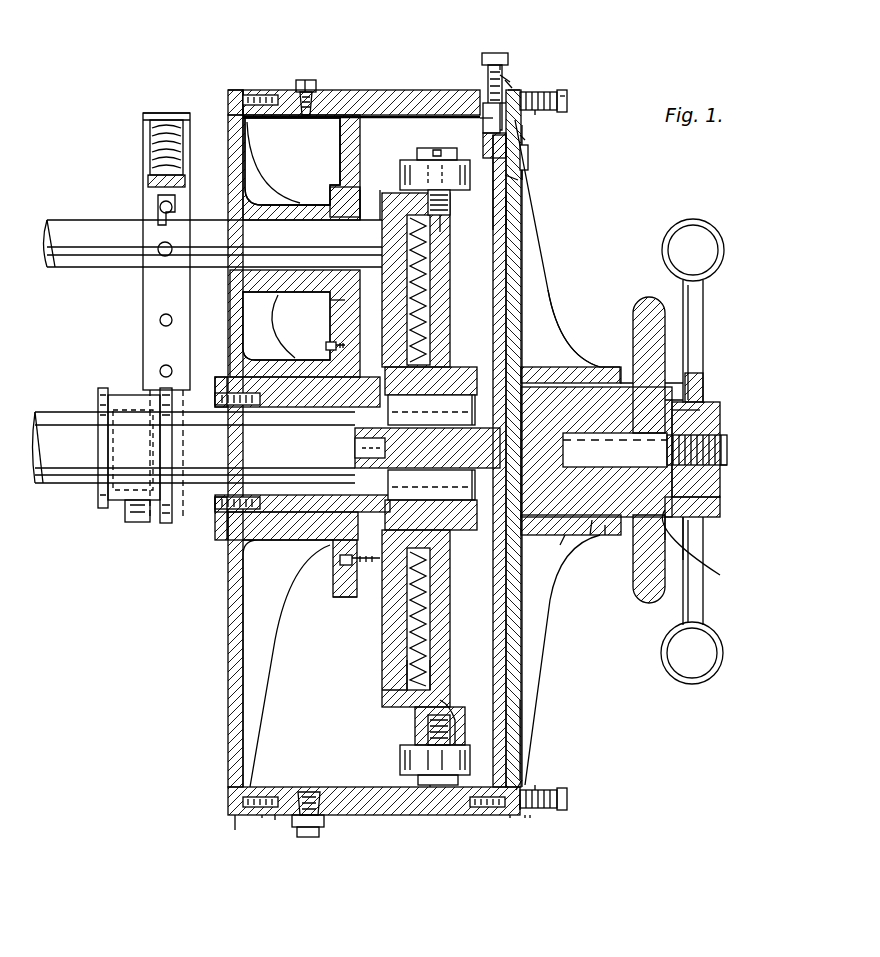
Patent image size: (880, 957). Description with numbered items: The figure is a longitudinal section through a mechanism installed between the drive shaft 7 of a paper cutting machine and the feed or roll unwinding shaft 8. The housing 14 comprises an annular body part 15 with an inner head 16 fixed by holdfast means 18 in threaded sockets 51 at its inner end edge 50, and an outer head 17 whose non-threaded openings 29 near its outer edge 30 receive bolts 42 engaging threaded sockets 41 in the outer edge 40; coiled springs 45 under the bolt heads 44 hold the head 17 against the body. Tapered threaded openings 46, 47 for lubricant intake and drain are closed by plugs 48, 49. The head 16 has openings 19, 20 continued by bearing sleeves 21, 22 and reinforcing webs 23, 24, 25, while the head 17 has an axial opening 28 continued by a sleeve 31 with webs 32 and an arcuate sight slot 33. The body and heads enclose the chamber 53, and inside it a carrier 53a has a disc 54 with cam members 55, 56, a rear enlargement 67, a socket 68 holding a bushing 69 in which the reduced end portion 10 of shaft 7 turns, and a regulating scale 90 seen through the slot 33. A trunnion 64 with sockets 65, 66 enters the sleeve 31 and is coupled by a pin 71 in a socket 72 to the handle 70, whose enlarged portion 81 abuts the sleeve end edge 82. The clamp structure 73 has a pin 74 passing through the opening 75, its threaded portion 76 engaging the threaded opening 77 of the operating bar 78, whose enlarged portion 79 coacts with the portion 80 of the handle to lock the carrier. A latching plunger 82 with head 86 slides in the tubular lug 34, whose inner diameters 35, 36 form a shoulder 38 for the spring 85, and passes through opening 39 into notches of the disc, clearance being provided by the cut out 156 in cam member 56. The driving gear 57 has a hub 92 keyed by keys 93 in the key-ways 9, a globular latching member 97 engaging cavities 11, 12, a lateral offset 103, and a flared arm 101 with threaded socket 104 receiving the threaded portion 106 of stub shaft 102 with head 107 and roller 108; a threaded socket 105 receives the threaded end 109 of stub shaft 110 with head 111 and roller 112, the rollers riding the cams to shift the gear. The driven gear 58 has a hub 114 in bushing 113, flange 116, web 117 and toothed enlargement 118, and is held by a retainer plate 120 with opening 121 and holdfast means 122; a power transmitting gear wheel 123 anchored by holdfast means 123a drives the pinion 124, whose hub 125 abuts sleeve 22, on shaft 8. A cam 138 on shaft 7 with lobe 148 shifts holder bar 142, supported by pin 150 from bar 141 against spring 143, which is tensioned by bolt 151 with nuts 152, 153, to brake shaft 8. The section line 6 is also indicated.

The section line 6 is at (350, 860).
The drive shaft 7 is at (68, 488).
The feed shaft 8 is at (75, 235).
The key-ways 9 is at (520, 435).
The reduced end terminal portion 10 is at (520, 440).
The cavity 11 is at (460, 409).
The cavity 12 is at (460, 484).
The housing 14 is at (326, 84).
The annular body part 15 is at (385, 100).
The inner head 16 is at (220, 694).
The outer head 17 is at (538, 656).
The holdfast means 18 is at (240, 803).
The opening 19 is at (275, 548).
The opening 20 is at (240, 200).
The bearing sleeve 21 is at (290, 352).
The bearing sleeve 22 is at (290, 205).
The reinforcing web 23 is at (270, 195).
The reinforcing web 24 is at (285, 320).
The reinforcing web 25 is at (265, 603).
The axial opening 28 is at (580, 540).
The non-threaded openings 29 is at (522, 818).
The outer edge 30 is at (532, 820).
The sleeve 31 is at (595, 365).
The reinforcing webs 32 is at (545, 250).
The arcuate slot 33 is at (528, 155).
The tubular lug 34 is at (488, 72).
The inner face diameter 35 is at (505, 75).
The inner face diameter 36 is at (515, 95).
The internal shoulder 38 is at (484, 108).
The opening 39 is at (484, 118).
The outer edge 40 is at (505, 818).
The threaded sockets 41 is at (522, 787).
The threaded bolts 42 is at (525, 812).
The bolt heads 44 is at (568, 802).
The coiled springs 45 is at (545, 790).
The threaded opening 46 is at (298, 86).
The threaded opening 47 is at (280, 817).
The threaded plug 48 is at (305, 78).
The threaded plug 49 is at (310, 790).
The inner end edge 50 is at (245, 817).
The threaded sockets 51 is at (266, 818).
The chamber 53 is at (505, 222).
The carrier 53a is at (484, 138).
The circular disc 54 is at (510, 210).
The arcuate cam member 55 is at (525, 170).
The arcuate cam member 56 is at (525, 750).
The driving gear 57 is at (440, 600).
The driven gear 58 is at (385, 632).
The trunnion 64 is at (605, 538).
The socket 65 is at (650, 380).
The socket 66 is at (608, 540).
The circular enlargement 67 is at (485, 400).
The axial socket 68 is at (545, 535).
The bushing 69 is at (560, 345).
The handle 70 is at (650, 297).
The pin 71 is at (700, 378).
The socket 72 is at (720, 415).
The clamp structure 73 is at (705, 310).
The pin 74 is at (616, 450).
The opening 75 is at (685, 488).
The threaded outer portion 76 is at (728, 440).
The threaded opening 77 is at (725, 468).
The operating bar 78 is at (705, 548).
The enlarged portion 79 is at (690, 520).
The enlarged circular portion 80 is at (690, 410).
The enlarged circular portion 81 is at (620, 367).
The latching member 82 is at (722, 572).
The plunger controlling spring 85 is at (510, 85).
The head 86 is at (497, 55).
The regulating scale 90 is at (528, 148).
The hub 92 is at (455, 530).
The keys 93 is at (431, 447).
The globular latching member 97 is at (408, 660).
The flared arm 101 is at (415, 738).
The stub shaft 102 is at (418, 778).
The lateral offset 103 is at (448, 210).
The threaded socket 104 is at (465, 700).
The threaded socket 105 is at (445, 232).
The reduced threaded inner portion 106 is at (428, 728).
The head 107 is at (435, 787).
The roller 108 is at (420, 760).
The reduced threaded end 109 is at (515, 190).
The stub shaft 110 is at (410, 165).
The head 111 is at (420, 150).
The roller 112 is at (419, 176).
The bushing 113 is at (255, 545).
The hub 114 is at (295, 405).
The annular flange 116 is at (330, 303).
The web 117 is at (380, 245).
The annular enlargement 118 is at (400, 690).
The retainer plate 120 is at (228, 520).
The opening 121 is at (220, 510).
The holdfast means 122 is at (225, 510).
The power transmitting gear wheel 123 is at (345, 600).
The holdfast means 123a is at (335, 565).
The pinion 124 is at (335, 185).
The hub 125 is at (335, 200).
The cam 138 is at (125, 400).
The holder bar 141 is at (150, 128).
The holder bar 142 is at (150, 282).
The controlling spring 143 is at (150, 150).
The lobe 148 is at (160, 520).
The pin 150 is at (160, 372).
The headed threaded bolt 151 is at (160, 245).
The securing nut 152 is at (148, 180).
The clamping nut 153 is at (157, 203).
The cut out 156 is at (478, 800).